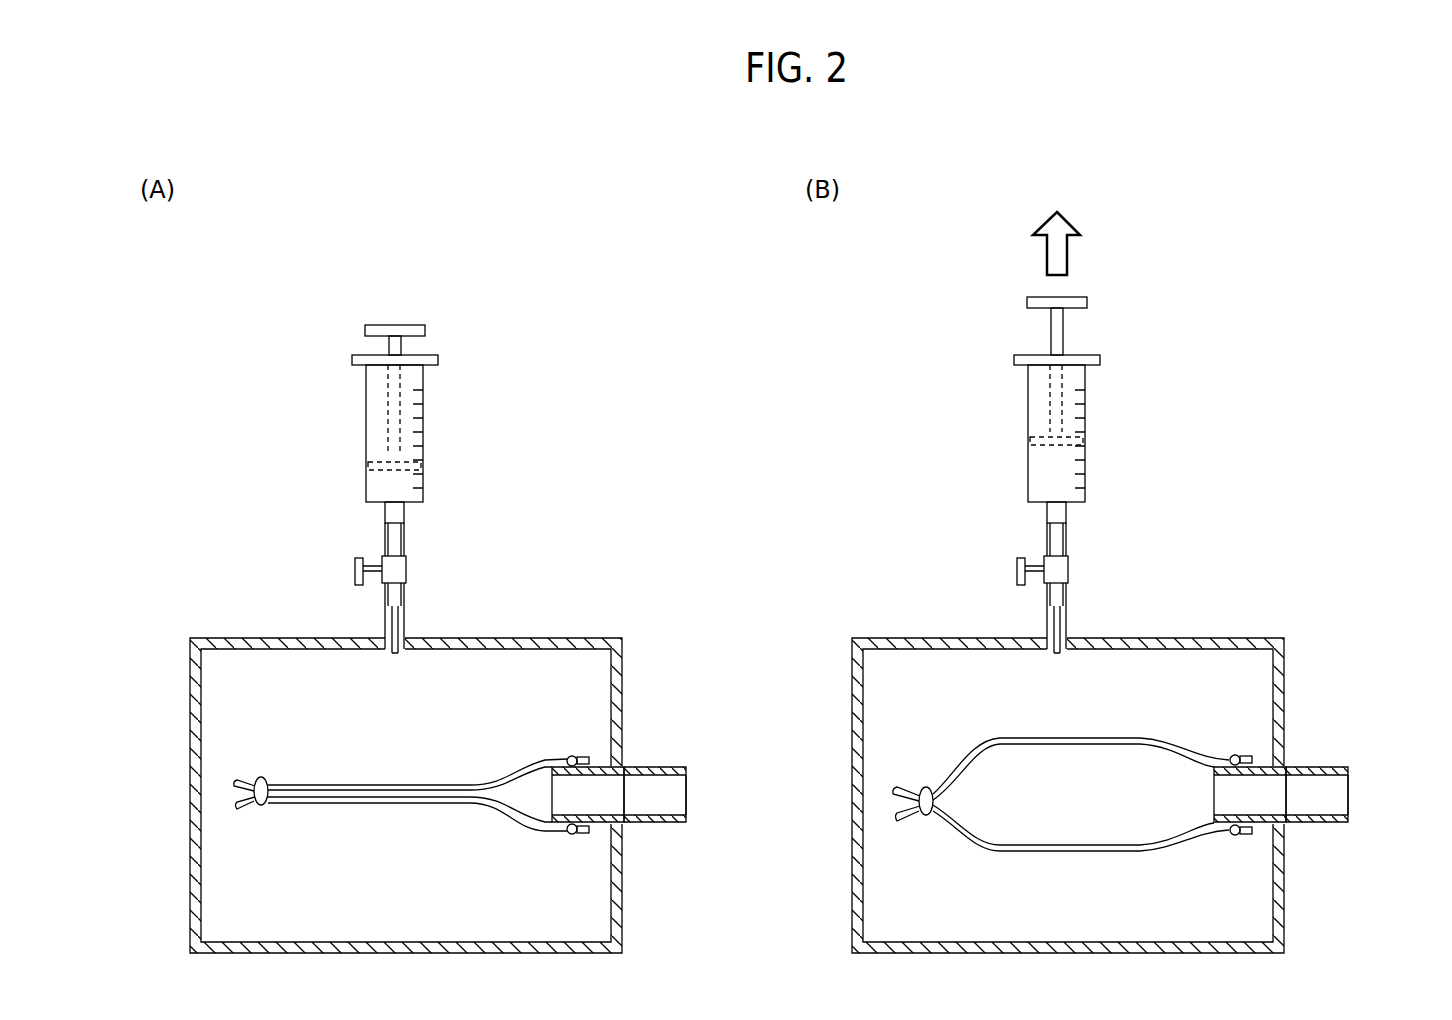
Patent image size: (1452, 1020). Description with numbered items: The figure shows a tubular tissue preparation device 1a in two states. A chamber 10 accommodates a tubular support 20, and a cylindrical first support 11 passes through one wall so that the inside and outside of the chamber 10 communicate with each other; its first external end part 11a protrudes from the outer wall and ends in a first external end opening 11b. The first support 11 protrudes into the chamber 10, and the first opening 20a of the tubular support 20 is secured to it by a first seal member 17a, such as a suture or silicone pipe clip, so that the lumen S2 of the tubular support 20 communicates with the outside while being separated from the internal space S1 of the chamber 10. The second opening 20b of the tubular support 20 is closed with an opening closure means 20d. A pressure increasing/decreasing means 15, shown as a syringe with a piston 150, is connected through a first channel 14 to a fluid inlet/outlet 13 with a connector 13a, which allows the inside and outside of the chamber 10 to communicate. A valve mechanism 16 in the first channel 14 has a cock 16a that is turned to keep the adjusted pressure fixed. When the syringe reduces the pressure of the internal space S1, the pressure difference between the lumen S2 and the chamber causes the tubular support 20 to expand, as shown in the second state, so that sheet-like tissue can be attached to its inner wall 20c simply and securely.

The tubular tissue preparation device 1a is at (646, 306).
The chamber 10 is at (230, 637).
The first support 11 is at (600, 765).
The first external end part 11a is at (667, 766).
The first external end opening 11b is at (702, 796).
The fluid inlet/outlet 13 is at (389, 664).
The connector 13a is at (389, 631).
The first channel 14 is at (408, 592).
The pressure increasing/decreasing means 15 is at (423, 380).
The piston 150 is at (413, 324).
The valve mechanism 16 is at (407, 567).
The cock 16a is at (360, 556).
The first seal member 17a is at (572, 836).
The tubular support 20 is at (401, 805).
The first opening 20a is at (552, 749).
The second opening 20b is at (252, 767).
The inner wall 20c is at (1163, 762).
The opening closure means 20d is at (258, 806).
The internal space S1 is at (550, 665).
The lumen S2 is at (536, 803).